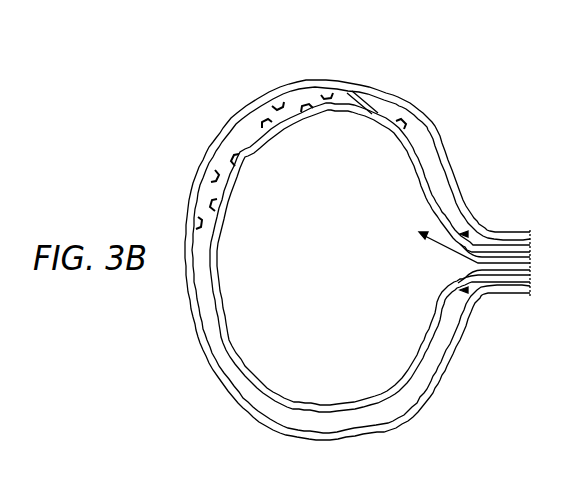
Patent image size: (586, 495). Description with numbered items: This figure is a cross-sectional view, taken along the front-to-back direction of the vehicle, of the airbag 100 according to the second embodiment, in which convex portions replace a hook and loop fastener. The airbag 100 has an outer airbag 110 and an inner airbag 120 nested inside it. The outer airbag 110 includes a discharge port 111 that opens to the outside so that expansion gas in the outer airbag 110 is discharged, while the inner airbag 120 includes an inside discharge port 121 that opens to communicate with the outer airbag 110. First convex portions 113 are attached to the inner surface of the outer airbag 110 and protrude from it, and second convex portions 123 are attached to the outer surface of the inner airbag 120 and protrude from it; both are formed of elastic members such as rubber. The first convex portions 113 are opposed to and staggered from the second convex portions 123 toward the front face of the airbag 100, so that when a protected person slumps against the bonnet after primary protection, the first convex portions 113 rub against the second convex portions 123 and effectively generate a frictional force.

The airbag 100 is at (446, 54).
The outer airbag 110 is at (452, 143).
The discharge port 111 is at (363, 432).
The first convex portions 113 is at (220, 137).
The inner airbag 120 is at (386, 107).
The inside discharge port 121 is at (393, 391).
The second convex portions 123 is at (355, 92).